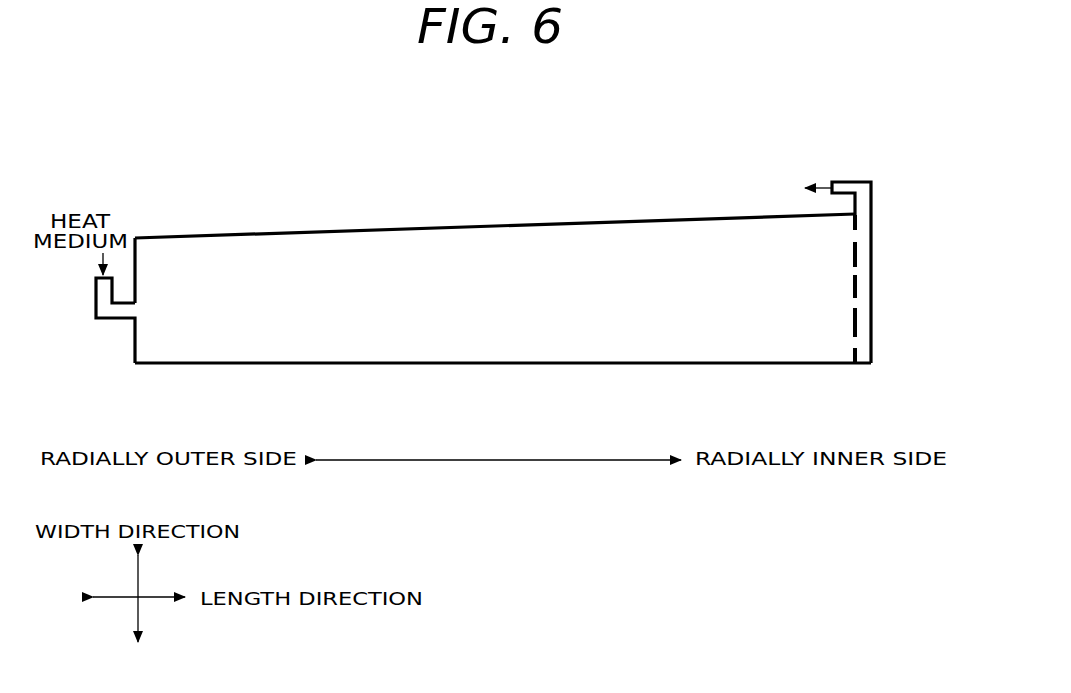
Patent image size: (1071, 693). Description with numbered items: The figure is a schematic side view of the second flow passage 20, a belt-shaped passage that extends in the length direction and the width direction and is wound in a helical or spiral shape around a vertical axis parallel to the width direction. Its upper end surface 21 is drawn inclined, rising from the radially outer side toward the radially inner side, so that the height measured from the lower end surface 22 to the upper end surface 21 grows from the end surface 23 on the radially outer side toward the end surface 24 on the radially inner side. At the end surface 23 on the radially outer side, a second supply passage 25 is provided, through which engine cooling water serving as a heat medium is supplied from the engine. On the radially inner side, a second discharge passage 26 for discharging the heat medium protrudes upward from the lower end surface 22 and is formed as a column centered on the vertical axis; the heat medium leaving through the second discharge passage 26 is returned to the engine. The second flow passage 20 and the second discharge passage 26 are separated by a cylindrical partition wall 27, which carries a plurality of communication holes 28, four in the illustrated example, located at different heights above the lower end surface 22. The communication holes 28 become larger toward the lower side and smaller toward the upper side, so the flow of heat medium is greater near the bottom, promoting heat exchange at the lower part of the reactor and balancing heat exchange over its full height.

The second flow passage 20 is at (485, 286).
The upper end surface 21 is at (710, 218).
The lower end surface 22 is at (656, 365).
The end surface on a radially outer side 23 is at (134, 237).
The end surface on a radially inner side 24 is at (873, 232).
The second supply passage 25 is at (95, 300).
The second discharge passage 26 is at (864, 364).
The partition wall 27 is at (853, 365).
The communication holes 28 is at (857, 238).